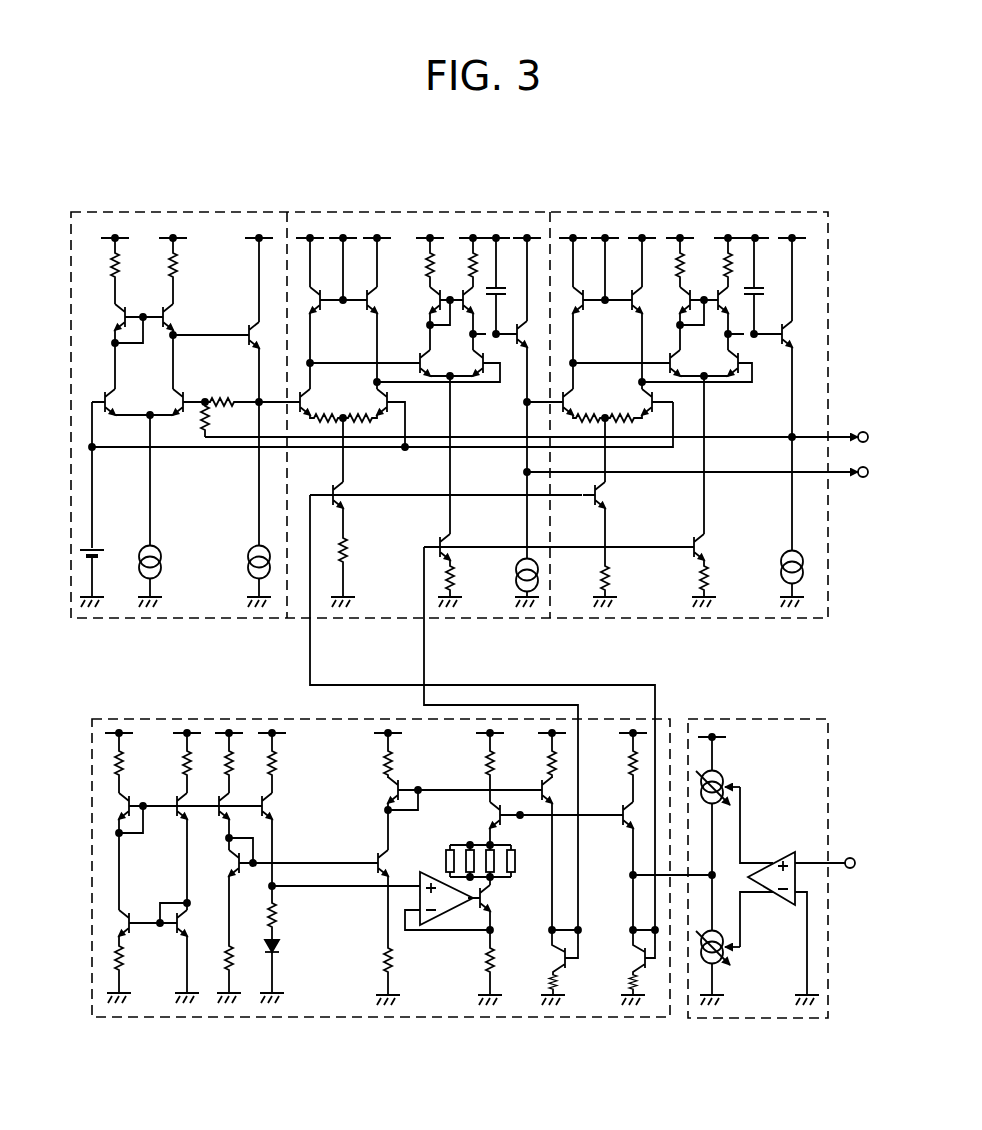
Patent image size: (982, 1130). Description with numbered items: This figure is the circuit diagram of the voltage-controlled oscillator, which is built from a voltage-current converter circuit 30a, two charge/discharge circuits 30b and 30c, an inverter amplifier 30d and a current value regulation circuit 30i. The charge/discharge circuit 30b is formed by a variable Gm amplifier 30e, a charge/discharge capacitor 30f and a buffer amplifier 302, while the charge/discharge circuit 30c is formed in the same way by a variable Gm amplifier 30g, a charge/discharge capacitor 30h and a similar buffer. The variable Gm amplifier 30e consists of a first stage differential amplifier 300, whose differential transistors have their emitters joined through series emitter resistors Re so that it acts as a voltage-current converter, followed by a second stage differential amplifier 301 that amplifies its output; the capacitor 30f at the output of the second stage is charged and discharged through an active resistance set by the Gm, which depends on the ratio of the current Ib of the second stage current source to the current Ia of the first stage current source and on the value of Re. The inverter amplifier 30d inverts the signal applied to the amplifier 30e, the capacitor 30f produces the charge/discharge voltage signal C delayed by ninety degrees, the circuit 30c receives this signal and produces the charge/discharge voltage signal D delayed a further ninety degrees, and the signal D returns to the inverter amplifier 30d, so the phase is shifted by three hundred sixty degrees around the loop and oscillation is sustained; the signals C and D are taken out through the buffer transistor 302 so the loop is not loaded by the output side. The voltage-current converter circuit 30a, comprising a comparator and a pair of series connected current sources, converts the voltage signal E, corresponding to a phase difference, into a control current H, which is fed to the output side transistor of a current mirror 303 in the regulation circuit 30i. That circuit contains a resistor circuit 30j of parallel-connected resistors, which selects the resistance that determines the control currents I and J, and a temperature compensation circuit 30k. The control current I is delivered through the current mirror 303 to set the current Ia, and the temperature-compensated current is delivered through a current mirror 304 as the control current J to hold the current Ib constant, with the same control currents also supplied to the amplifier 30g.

The voltage-current converter circuit 30a is at (745, 1020).
The charge/discharge circuit 30b is at (303, 218).
The charge/discharge circuit 30c is at (653, 215).
The inverter amplifier 30d is at (152, 210).
The variable Gm amplifier 30e is at (403, 250).
The charge/discharge capacitor 30f is at (505, 270).
The variable Gm amplifier 30g is at (660, 262).
The charge/discharge capacitor 30h is at (772, 258).
The current value regulation circuit 30i is at (590, 1020).
The resistor circuit 30j is at (516, 884).
The temperature compensation circuit 30k is at (157, 957).
The first stage differential amplifier 300 is at (324, 347).
The second stage differential amplifier 301 is at (464, 417).
The buffer amplifier 302 is at (536, 348).
The current mirror 303 is at (606, 832).
The current mirror 304 is at (450, 795).
The charge/discharge voltage signal C is at (815, 472).
The charge/discharge voltage signal D is at (812, 437).
The voltage signal E is at (808, 857).
The control current H is at (678, 870).
The control current I is at (311, 653).
The control current J is at (424, 653).
The current of the current source of the first stage differential amplifier Ia is at (355, 455).
The current of the current source of the second stage differential amplifier Ib is at (462, 507).